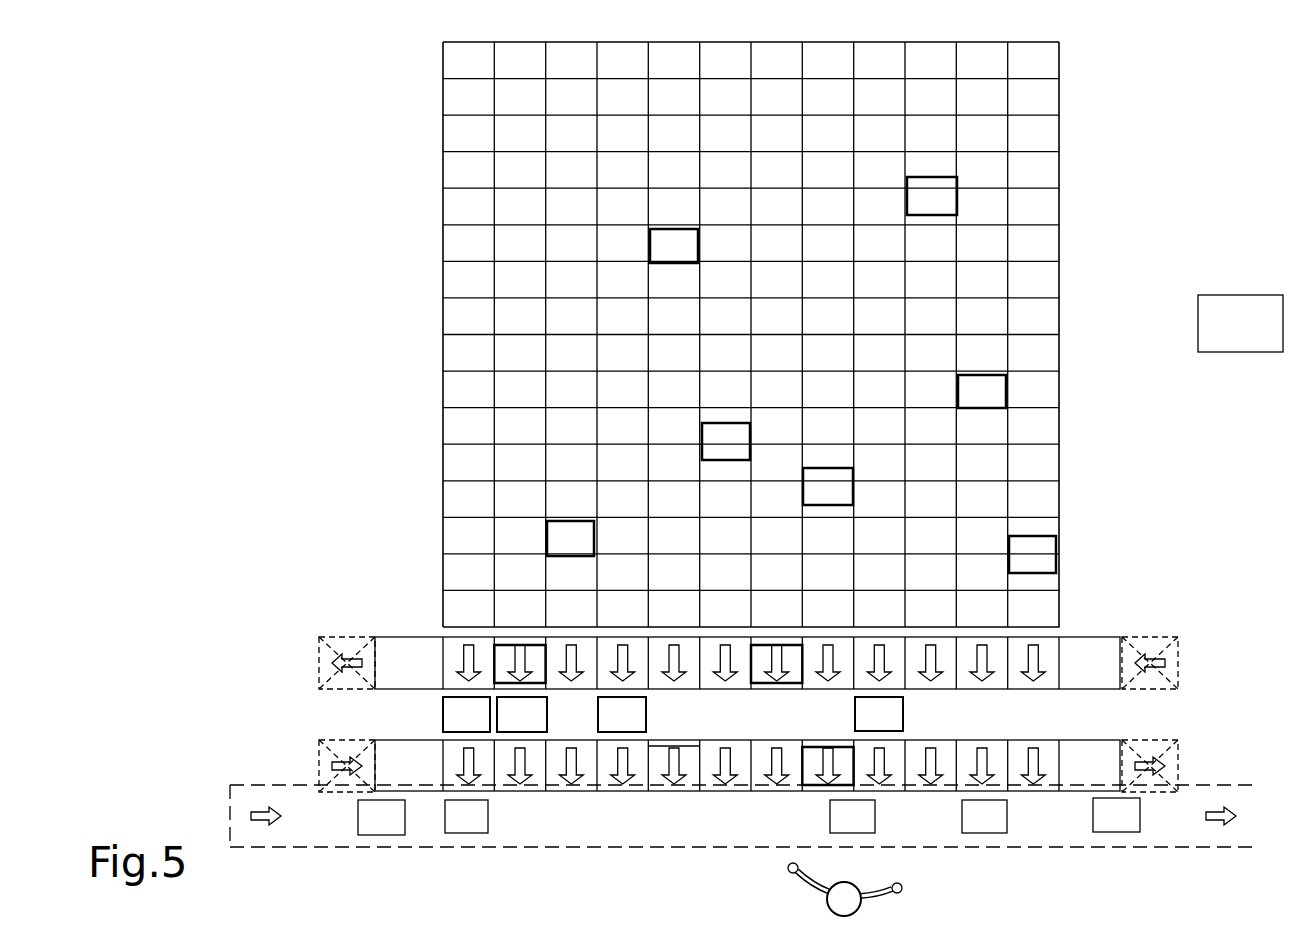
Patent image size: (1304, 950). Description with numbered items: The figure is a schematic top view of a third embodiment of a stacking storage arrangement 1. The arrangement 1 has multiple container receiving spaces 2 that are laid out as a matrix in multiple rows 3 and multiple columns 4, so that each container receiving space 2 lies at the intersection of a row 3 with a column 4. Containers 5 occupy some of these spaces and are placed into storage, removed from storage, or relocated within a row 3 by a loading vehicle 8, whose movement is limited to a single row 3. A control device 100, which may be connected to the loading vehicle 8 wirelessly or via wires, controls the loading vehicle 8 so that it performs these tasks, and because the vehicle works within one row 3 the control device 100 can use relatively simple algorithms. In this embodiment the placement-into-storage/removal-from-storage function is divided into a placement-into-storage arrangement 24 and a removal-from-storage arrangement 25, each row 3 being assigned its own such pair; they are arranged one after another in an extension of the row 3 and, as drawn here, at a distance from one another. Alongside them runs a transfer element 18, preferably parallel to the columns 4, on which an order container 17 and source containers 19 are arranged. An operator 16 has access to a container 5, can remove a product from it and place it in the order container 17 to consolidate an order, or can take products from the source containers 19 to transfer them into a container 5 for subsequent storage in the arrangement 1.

The stacking storage arrangement 1 is at (1108, 89).
The container receiving spaces 2 is at (988, 288).
The rows 3 is at (465, 39).
The columns 4 is at (441, 96).
The containers 5 is at (988, 392).
The loading vehicle 8 is at (515, 720).
The operator 16 is at (848, 895).
The order container 17 is at (468, 823).
The transfer element 18 is at (545, 826).
The source containers 19 is at (383, 822).
The placement-into-storage arrangement 24 is at (453, 652).
The removal-from-storage arrangement 25 is at (443, 790).
The control device 100 is at (1216, 336).